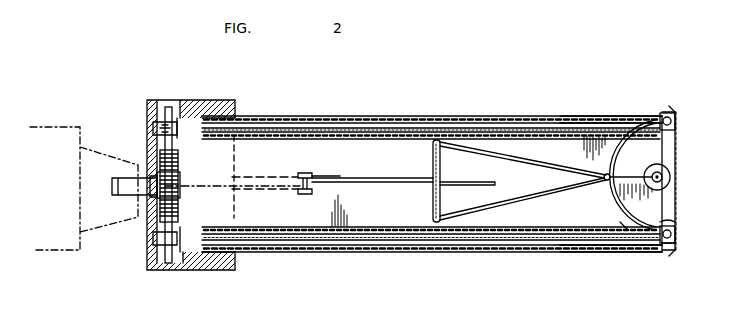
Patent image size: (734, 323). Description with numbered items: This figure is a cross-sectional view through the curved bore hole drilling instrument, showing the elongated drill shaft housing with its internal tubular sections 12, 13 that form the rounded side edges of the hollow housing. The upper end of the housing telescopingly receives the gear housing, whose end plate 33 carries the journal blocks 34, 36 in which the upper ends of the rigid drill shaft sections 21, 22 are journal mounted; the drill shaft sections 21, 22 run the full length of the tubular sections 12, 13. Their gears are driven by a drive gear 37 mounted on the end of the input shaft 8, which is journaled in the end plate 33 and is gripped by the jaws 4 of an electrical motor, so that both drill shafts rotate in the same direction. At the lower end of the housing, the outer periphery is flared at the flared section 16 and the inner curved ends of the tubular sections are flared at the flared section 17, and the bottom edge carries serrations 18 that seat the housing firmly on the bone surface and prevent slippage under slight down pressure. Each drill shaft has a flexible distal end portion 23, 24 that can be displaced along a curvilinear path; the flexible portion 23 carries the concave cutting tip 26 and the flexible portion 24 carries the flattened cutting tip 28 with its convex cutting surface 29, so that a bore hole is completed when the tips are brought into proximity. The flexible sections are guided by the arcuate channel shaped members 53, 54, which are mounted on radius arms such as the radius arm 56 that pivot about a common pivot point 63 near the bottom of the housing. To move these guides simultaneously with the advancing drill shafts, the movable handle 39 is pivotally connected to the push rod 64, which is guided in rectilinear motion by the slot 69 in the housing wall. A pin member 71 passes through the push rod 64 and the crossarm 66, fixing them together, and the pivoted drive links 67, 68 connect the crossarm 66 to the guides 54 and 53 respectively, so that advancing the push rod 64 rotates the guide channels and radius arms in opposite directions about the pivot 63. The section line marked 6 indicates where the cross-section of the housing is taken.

The jaws 4 is at (106, 150).
The section line 6- 6 is at (60, 127).
The input shaft 8 is at (127, 192).
The tubular section 12 is at (390, 116).
The tubular section 13 is at (388, 250).
The flared section 16 is at (670, 110).
The flared section 17 is at (677, 216).
The serrations 18 is at (677, 130).
The drill shaft section 21 is at (356, 130).
The drill shaft section 22 is at (355, 241).
The flexible distal end portion 23 is at (570, 116).
The flexible distal end portion 24 is at (582, 252).
The cutting tip 26 is at (677, 119).
The cutting tip 28 is at (677, 251).
The convex cutting surface 29 is at (677, 237).
The end plate 33 is at (150, 238).
The journal block 34 is at (157, 124).
The journal block 36 is at (166, 268).
The drive gear 37 is at (176, 158).
The movable handle 39 is at (301, 172).
The arcuate channel shaped member 53 is at (604, 120).
The arcuate channel shaped member 54 is at (626, 232).
The radius arm 56 is at (667, 170).
The common pivot point 63 is at (663, 178).
The push rod 64 is at (368, 178).
The crossarm 66 is at (432, 161).
The pivoted drive link 67 is at (533, 164).
The pivoted drive link 68 is at (530, 197).
The slot 69 is at (489, 183).
The pin member 71 is at (436, 184).